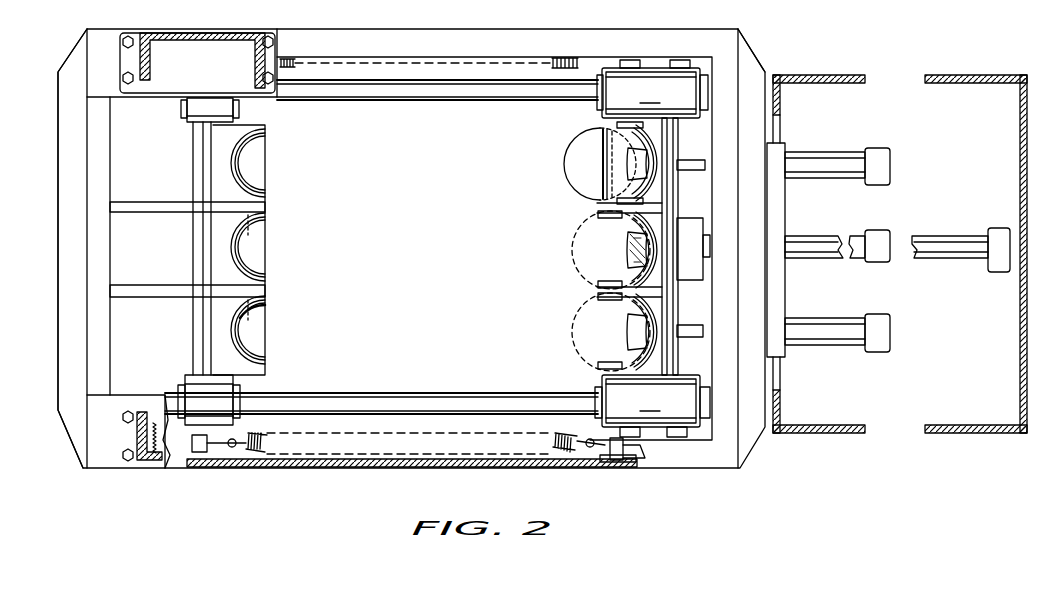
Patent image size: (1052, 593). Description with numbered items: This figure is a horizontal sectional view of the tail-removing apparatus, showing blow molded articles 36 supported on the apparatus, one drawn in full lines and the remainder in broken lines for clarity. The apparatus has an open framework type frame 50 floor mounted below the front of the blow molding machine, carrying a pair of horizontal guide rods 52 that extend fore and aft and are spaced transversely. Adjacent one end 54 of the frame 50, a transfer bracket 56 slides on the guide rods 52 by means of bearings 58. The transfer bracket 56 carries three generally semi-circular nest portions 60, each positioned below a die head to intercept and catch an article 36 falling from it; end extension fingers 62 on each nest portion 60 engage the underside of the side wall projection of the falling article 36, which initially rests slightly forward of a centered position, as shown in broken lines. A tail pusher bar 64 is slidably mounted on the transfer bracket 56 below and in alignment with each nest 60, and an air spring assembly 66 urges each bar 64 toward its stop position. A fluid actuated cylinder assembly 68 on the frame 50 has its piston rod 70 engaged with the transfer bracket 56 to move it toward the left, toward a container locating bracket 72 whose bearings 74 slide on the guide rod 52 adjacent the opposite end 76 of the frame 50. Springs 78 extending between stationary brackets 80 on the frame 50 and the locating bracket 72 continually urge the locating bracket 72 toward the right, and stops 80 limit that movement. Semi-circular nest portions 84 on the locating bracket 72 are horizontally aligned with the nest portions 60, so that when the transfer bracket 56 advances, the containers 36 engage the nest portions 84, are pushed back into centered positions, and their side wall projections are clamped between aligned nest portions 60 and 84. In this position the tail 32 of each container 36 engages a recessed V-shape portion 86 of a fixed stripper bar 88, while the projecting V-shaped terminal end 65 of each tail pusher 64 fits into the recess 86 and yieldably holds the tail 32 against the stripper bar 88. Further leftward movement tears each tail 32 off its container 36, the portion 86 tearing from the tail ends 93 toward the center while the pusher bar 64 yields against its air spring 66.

The lower end portion 32 is at (603, 170).
The plastic article 36 is at (573, 247).
The frame 50 is at (672, 41).
The guide rods 52 is at (437, 98).
The end of frame 54 is at (749, 63).
The transfer bracket 56 is at (668, 309).
The bearings 58 is at (652, 248).
The nest portions 60 is at (655, 136).
The end extension fingers 62 is at (600, 216).
The tail pusher bar 64 is at (640, 237).
The terminal ends 65 is at (628, 258).
The air spring assembly 66 is at (815, 152).
The fluid actuated cylinder assembly 68 is at (818, 238).
The piston rod 70 is at (704, 240).
The container locating bracket 72 is at (202, 240).
The bearings 74 is at (200, 112).
The end of frame 76 is at (66, 156).
The springs 78 is at (563, 57).
The stationary brackets 80 is at (617, 462).
The nest portions 84 is at (233, 163).
The recessed V-shape portion 86 is at (243, 168).
The stripper bar 88 is at (247, 315).
The ends of tail 93 is at (603, 131).